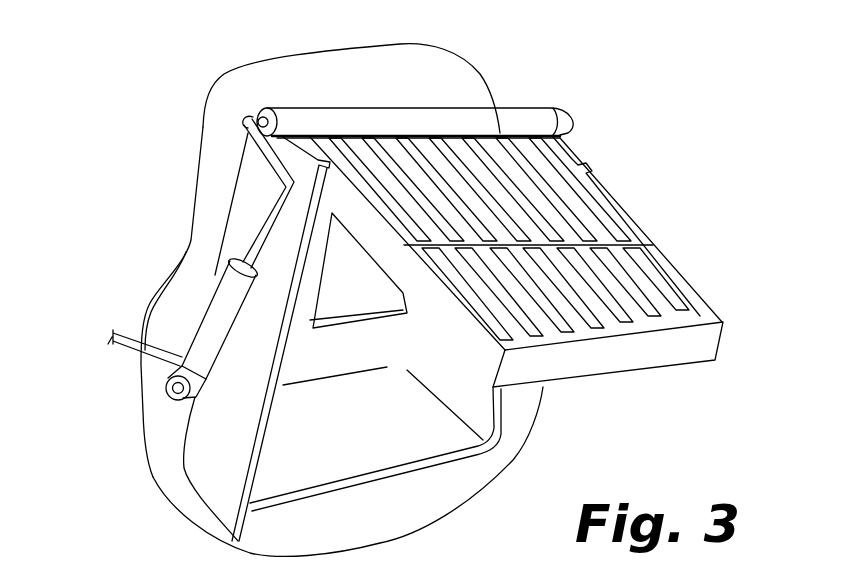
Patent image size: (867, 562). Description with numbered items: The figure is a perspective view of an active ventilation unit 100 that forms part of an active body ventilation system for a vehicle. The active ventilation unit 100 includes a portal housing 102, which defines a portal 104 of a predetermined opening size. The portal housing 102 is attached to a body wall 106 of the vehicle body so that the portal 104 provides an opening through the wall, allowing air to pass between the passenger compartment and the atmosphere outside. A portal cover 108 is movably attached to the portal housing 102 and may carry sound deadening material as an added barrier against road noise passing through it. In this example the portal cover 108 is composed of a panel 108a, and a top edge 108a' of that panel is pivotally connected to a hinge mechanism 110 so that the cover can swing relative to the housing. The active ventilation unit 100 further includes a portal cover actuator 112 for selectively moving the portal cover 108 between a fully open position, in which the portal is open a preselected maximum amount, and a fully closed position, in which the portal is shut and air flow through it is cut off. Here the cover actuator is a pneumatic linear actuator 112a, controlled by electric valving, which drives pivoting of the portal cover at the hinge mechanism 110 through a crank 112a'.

The active ventilation unit 100 is at (628, 172).
The portal housing 102 is at (217, 478).
The portal 104 is at (353, 293).
The body wall 106 is at (252, 90).
The portal cover 108 is at (648, 263).
The panel 108a is at (645, 320).
The top edge 108a' is at (438, 88).
The hinge mechanism 110 is at (407, 107).
The portal cover actuator 112 is at (178, 233).
The pneumatic linear actuator 112a is at (165, 327).
The crank 112a' is at (206, 192).